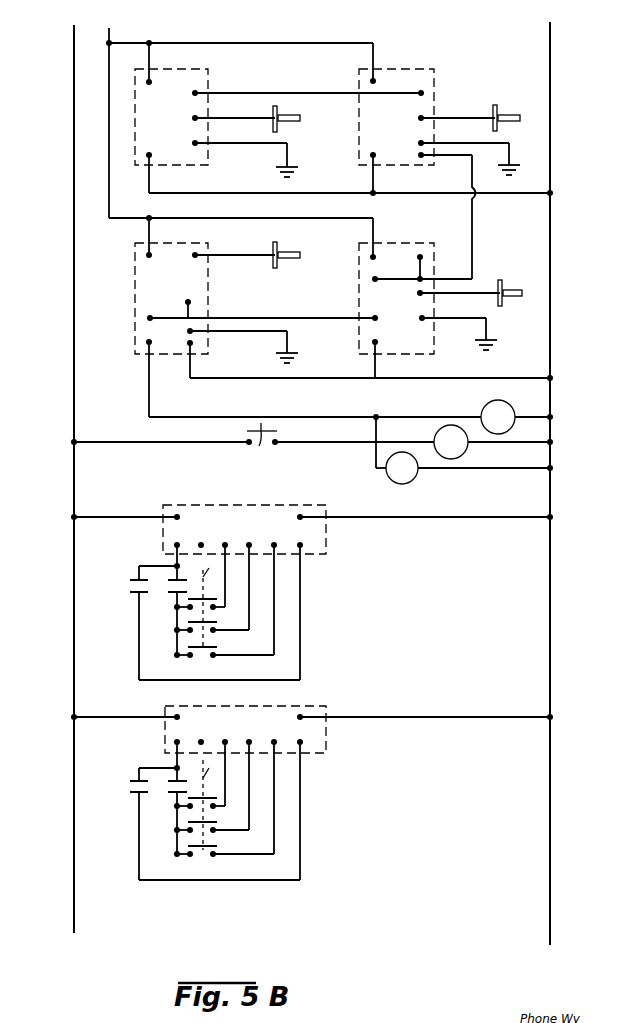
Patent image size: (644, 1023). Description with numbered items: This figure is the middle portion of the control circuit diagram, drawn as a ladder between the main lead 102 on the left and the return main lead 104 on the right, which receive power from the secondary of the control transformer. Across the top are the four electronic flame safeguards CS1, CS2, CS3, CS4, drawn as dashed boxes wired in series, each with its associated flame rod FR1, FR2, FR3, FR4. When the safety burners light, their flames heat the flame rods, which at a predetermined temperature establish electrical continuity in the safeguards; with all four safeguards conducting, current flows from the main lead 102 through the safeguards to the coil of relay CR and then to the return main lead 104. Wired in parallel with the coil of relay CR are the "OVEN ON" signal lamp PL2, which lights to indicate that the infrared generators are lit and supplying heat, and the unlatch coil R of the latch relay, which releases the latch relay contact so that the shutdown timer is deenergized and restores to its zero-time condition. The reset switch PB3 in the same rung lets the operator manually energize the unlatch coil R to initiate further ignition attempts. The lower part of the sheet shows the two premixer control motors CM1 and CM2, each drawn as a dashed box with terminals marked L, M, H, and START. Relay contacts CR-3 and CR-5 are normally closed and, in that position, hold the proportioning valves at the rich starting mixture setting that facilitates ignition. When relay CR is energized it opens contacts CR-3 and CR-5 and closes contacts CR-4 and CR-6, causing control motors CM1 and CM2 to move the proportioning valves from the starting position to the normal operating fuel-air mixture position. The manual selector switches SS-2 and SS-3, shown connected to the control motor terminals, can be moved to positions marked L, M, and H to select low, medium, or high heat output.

The main lead 102 is at (74, 69).
The return main lead 104 is at (551, 73).
The electronic flame safeguard CS1 is at (172, 128).
The electronic flame safeguard CS2 is at (399, 128).
The electronic flame safeguard CS3 is at (399, 308).
The electronic flame safeguard CS4 is at (171, 298).
The flame rod FR1 is at (287, 113).
The flame rod FR2 is at (516, 114).
The flame rod FR3 is at (503, 290).
The flame rod FR4 is at (287, 250).
The reset switch PB3 is at (252, 445).
The relay CR is at (515, 417).
The "OVEN ON" signal lamp PL2 is at (492, 442).
The unlatch coil R is at (463, 460).
The premixer control motor CM1 is at (213, 506).
The premixer control motor CM2 is at (203, 707).
The relay contact CR-3 is at (130, 590).
The relay contact CR-4 is at (168, 584).
The relay contact CR-5 is at (132, 792).
The relay contact CR-6 is at (173, 794).
The manual selector switch SS-2 is at (208, 637).
The manual selector switch SS-3 is at (204, 856).